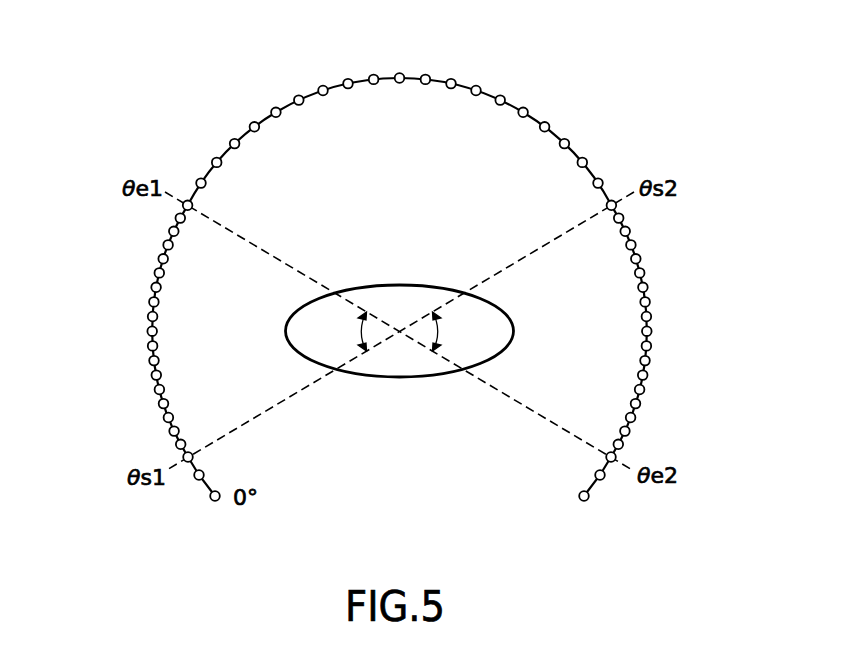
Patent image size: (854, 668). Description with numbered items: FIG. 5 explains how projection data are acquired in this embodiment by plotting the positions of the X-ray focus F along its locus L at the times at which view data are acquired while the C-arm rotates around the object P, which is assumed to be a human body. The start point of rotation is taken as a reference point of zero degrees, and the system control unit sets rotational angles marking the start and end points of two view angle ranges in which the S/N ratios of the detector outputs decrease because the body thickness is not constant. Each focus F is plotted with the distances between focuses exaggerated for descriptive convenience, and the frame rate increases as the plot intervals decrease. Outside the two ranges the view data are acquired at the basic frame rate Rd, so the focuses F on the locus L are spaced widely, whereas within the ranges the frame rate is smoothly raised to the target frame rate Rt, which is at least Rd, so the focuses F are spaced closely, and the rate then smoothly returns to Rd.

The X-ray focus F is at (290, 103).
The locus of the X-ray focus L is at (531, 111).
The object P is at (397, 378).
The rate Rd is at (397, 71).
The rate Rt is at (148, 318).